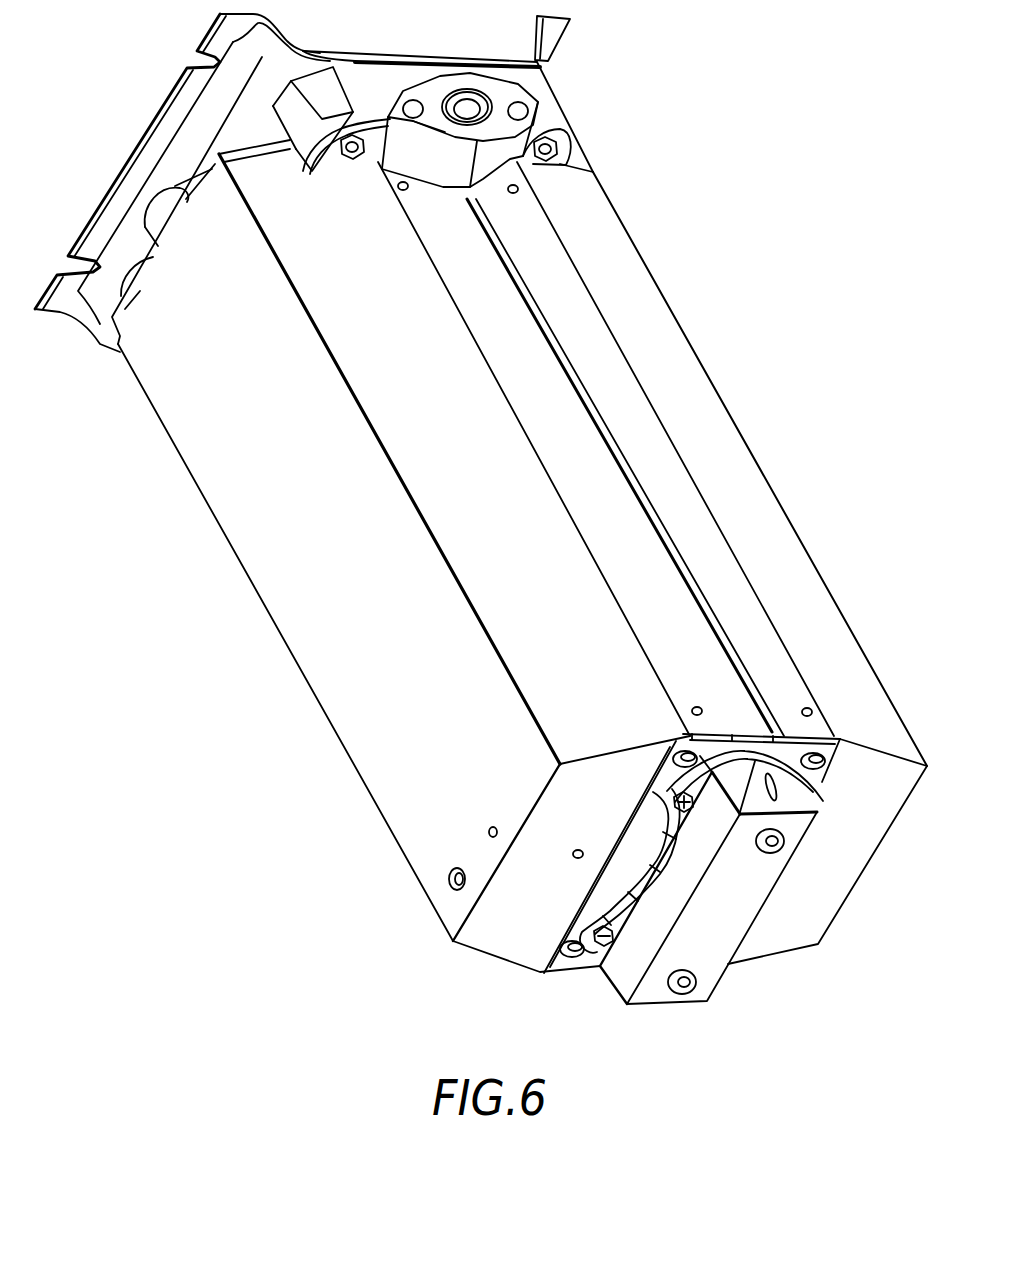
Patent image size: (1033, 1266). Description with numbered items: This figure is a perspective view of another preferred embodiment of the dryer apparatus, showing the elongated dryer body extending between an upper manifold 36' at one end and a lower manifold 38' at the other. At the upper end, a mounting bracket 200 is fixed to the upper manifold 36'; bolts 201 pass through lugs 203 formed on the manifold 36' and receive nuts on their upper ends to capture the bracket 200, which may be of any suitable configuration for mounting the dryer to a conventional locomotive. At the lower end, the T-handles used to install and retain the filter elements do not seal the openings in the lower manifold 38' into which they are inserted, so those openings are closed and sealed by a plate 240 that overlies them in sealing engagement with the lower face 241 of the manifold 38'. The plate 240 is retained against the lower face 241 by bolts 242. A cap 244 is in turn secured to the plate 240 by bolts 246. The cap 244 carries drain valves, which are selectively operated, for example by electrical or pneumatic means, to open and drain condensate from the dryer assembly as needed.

The mounting bracket 200 is at (153, 143).
The upper manifold 36' is at (455, 94).
The lugs 203 is at (560, 137).
The bolts 201 is at (350, 157).
The lower manifold 38' is at (773, 736).
The lower face 241 is at (638, 835).
The plate 240 is at (615, 920).
The bolts 242 is at (683, 797).
The bolts 246 is at (783, 787).
The cap 244 is at (765, 890).